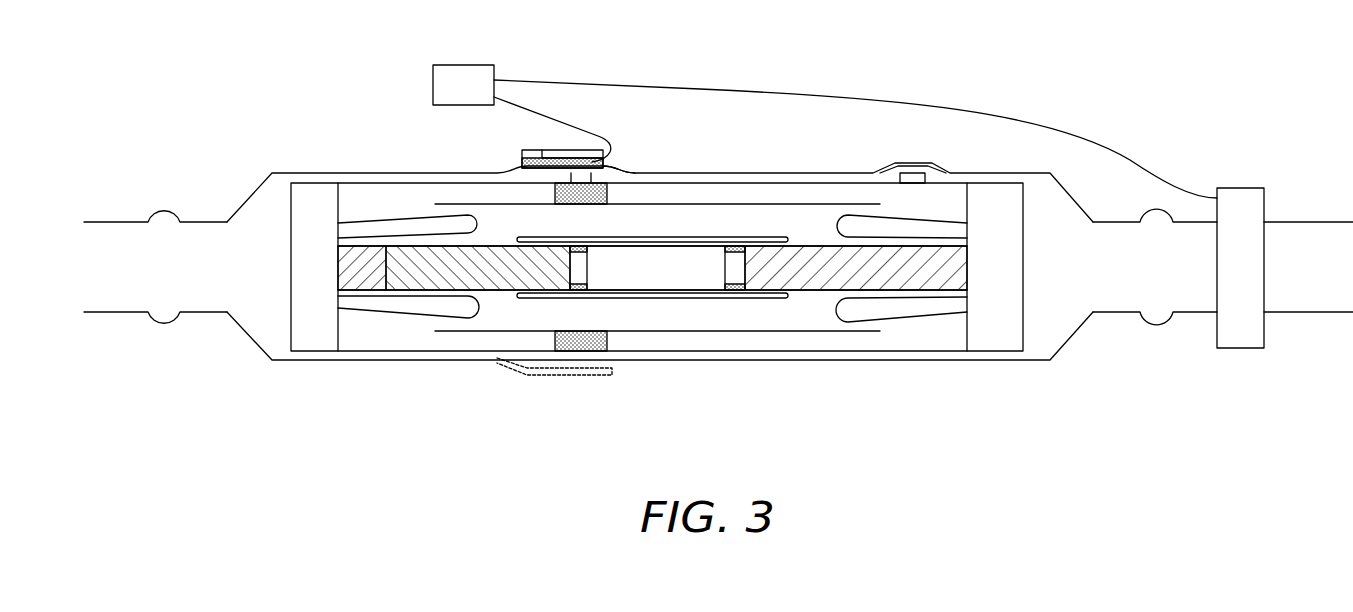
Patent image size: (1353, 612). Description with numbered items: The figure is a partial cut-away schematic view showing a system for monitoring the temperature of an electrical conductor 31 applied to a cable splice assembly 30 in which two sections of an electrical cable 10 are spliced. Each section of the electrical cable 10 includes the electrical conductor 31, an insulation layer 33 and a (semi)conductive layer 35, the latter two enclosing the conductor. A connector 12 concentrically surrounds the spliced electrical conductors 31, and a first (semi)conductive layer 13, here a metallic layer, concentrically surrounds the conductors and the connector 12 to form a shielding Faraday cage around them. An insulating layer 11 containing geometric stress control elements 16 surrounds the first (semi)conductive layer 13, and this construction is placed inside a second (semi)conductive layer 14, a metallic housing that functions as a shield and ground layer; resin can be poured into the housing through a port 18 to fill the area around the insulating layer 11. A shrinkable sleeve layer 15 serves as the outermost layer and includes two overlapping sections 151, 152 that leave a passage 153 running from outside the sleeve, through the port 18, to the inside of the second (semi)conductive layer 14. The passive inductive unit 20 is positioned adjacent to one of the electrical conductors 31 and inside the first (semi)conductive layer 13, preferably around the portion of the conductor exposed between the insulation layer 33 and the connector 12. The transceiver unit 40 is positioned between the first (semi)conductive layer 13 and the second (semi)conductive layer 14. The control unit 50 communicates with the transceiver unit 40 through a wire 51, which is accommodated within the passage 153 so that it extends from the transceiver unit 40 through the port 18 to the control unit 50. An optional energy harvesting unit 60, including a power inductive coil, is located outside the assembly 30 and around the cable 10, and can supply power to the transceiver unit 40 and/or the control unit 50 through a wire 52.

The electrical cable 10 is at (1189, 324).
The insulating layer 11 is at (820, 308).
The connector 12 is at (640, 270).
The first (semi)conductive layer 13 is at (693, 293).
The second (semi)conductive layer 14 is at (995, 337).
The shrinkable sleeve layer 15 is at (1068, 330).
The geometric stress control elements 16 is at (433, 235).
The port 18 is at (912, 181).
The passive inductive unit 20 is at (573, 263).
The cable splice assembly 30 is at (462, 394).
The electrical conductor 31 is at (733, 268).
The insulation layer 33 is at (430, 263).
The (semi)conductive layer 35 is at (358, 263).
The transceiver unit 40 is at (580, 338).
The control unit 50 is at (432, 83).
The wire 51 is at (518, 106).
The wire 52 is at (719, 91).
The energy harvesting unit 60 is at (1240, 206).
The overlapping section 151 is at (505, 168).
The overlapping section 152 is at (616, 172).
The passage 153 is at (534, 157).